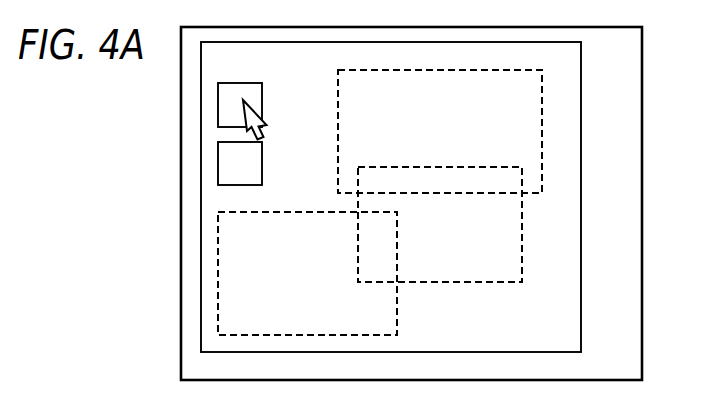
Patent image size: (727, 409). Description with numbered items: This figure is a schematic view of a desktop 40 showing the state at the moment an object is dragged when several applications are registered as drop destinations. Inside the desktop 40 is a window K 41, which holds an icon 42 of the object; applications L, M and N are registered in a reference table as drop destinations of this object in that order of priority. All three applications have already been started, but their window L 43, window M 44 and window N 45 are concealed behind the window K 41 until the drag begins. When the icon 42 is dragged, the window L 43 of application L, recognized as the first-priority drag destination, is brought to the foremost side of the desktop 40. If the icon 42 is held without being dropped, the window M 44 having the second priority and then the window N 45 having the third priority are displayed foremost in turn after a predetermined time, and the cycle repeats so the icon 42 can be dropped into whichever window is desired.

The desktop 40 is at (642, 113).
The window K 41 is at (581, 195).
The icon 42 is at (262, 91).
The window L 43 is at (397, 311).
The window M 44 is at (340, 170).
The window N 45 is at (522, 240).